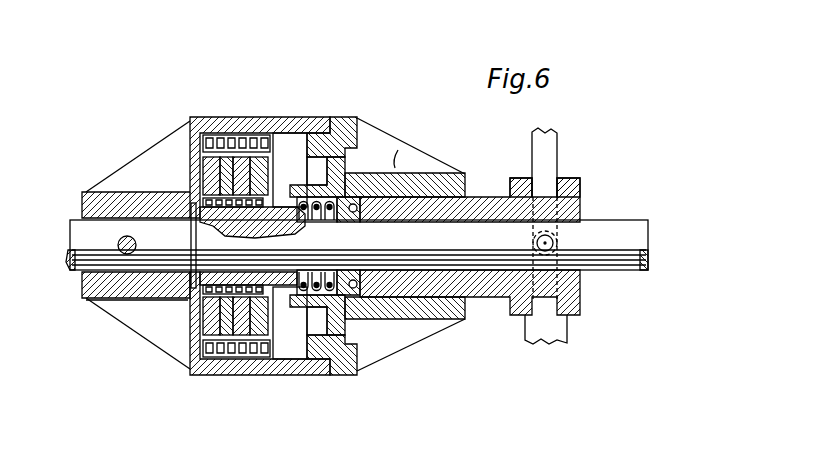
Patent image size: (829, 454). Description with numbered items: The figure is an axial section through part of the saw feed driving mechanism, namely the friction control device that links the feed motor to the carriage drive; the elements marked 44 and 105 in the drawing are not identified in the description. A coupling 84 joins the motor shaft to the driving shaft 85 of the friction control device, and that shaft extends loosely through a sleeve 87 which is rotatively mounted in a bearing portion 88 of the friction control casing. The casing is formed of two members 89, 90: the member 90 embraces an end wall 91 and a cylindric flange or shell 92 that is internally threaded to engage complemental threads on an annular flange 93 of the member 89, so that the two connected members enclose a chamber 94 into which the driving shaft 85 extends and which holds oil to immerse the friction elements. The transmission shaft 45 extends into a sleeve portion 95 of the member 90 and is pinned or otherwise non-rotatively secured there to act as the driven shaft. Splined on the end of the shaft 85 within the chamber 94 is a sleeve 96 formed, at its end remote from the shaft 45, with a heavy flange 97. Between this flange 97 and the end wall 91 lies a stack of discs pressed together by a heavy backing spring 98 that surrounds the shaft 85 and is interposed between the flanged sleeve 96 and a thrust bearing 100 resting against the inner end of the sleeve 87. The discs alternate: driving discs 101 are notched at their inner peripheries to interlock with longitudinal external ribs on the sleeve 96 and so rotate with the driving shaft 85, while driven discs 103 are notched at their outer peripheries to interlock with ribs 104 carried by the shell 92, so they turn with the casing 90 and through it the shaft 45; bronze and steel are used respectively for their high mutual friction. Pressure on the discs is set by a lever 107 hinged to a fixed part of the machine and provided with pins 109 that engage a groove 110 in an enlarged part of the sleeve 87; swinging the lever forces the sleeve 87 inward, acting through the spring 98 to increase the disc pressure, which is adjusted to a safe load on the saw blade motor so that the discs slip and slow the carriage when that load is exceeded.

The clutch 44 is at (225, 375).
The drive shaft 45 is at (72, 268).
The coupling 84 is at (332, 127).
The driving shaft 85 is at (608, 225).
The sleeve 87 is at (479, 203).
The bearing portion 88 is at (430, 190).
The casing member 89 is at (360, 187).
The casing member 90 is at (193, 123).
The end wall 91 is at (188, 167).
The cylindric flange or shell 92 is at (285, 133).
The annular flange 93 is at (375, 152).
The chamber 94 is at (290, 152).
The sleeve portion 95 is at (113, 302).
The sleeve 96 is at (188, 305).
The flange 97 is at (280, 337).
The backing spring 98 is at (362, 330).
The thrust bearing 100 is at (395, 168).
The driving discs 101 is at (226, 205).
The driven discs 103 is at (203, 373).
The ribs 104 is at (247, 340).
The pin 105 is at (246, 233).
The lever 107 is at (551, 333).
The pins 109 is at (557, 243).
The groove 110 is at (548, 188).